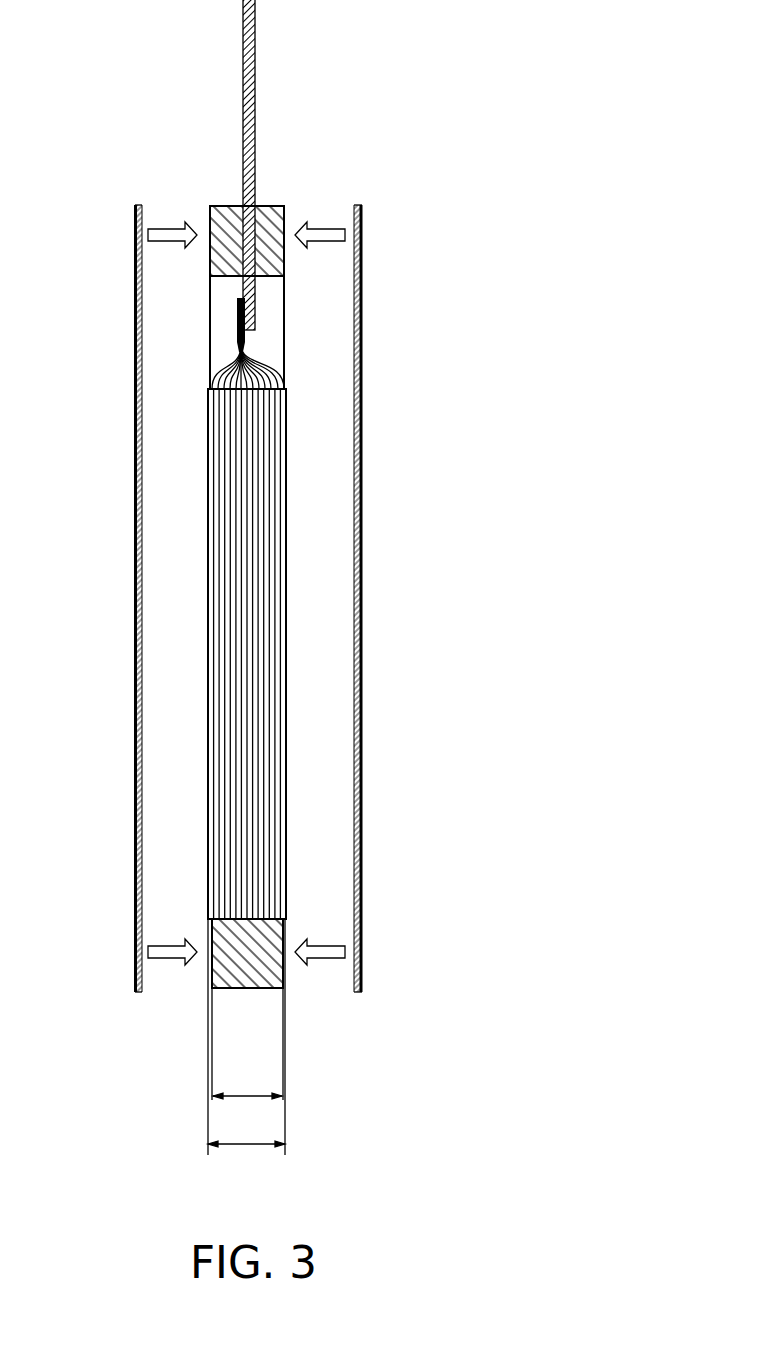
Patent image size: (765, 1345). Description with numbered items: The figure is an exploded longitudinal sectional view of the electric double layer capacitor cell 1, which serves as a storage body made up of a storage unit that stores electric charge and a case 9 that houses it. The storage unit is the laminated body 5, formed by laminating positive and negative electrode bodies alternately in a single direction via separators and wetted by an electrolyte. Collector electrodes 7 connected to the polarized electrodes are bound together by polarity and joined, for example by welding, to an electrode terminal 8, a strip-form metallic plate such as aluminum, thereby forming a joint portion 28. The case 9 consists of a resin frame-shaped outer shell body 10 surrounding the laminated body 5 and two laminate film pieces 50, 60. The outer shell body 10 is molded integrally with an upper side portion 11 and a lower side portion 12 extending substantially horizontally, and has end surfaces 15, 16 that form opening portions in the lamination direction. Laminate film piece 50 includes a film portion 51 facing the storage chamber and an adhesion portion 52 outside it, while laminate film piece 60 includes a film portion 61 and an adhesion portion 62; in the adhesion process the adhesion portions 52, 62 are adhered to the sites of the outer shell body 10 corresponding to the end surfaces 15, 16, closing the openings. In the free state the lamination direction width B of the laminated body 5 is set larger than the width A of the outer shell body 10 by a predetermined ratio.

The electric double layer capacitor cell 1 is at (246, 577).
The laminated body 5 is at (232, 815).
The collector electrodes 7 is at (250, 362).
The electrode terminal 8 is at (252, 150).
The case 9 is at (300, 1003).
The outer shell body 10 is at (259, 265).
The upper side portion 11 is at (283, 207).
The lower side portion 12 is at (283, 973).
The end surface 15 is at (243, 967).
The end surface 16 is at (283, 928).
The joint portion 28 is at (247, 313).
The laminate film piece 50 is at (119, 598).
The film portion 51 is at (135, 640).
The adhesion portion 52 is at (135, 238).
The laminate film piece 60 is at (370, 598).
The film portion 61 is at (362, 650).
The adhesion portion 62 is at (362, 225).